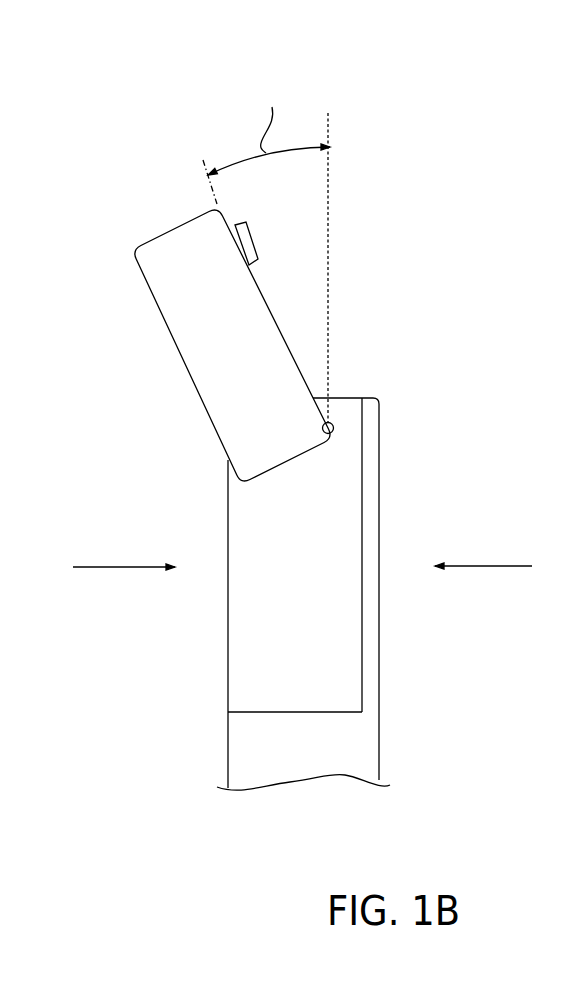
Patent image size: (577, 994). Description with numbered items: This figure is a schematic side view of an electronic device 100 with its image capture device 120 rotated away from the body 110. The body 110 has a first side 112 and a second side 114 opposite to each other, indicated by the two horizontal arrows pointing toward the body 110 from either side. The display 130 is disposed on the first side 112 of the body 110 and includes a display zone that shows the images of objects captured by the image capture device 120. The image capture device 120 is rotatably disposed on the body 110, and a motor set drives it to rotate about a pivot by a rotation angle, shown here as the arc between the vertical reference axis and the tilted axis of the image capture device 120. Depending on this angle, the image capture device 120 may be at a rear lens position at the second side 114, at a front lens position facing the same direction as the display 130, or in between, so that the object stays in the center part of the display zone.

The electronic device 100 is at (76, 70).
The body 110 is at (240, 746).
The first side 112 is at (480, 565).
The second side 114 is at (127, 565).
The image capture device 120 is at (252, 243).
The display 130 is at (378, 597).